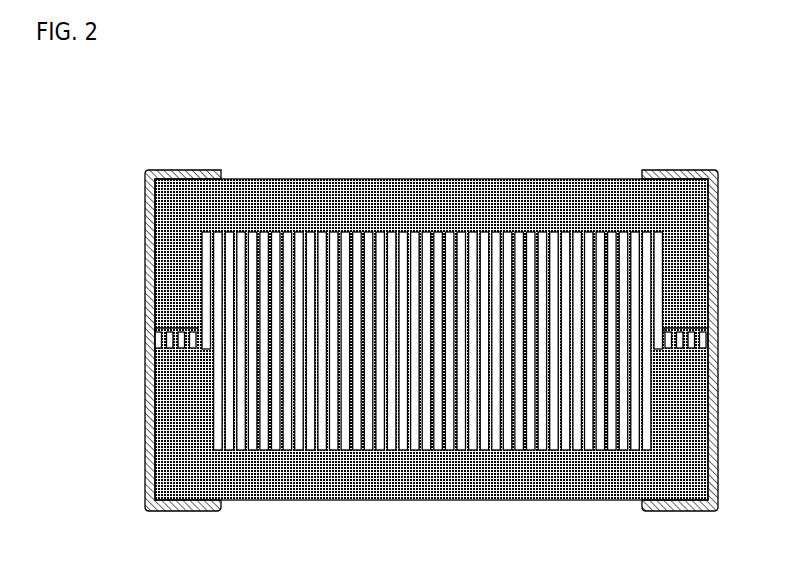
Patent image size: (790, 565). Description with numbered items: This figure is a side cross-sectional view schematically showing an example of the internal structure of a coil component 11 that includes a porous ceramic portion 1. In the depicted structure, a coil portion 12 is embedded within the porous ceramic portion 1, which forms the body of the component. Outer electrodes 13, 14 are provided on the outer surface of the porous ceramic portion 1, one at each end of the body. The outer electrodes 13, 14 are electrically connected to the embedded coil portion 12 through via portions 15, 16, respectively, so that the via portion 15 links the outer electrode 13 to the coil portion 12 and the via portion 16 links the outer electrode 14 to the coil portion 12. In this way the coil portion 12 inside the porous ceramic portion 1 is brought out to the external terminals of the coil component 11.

The porous ceramic portion 1 is at (428, 289).
The coil component 11 is at (428, 284).
The coil portion 12 is at (194, 245).
The outer electrode 13 is at (141, 188).
The outer electrode 14 is at (706, 187).
The via portion 15 is at (172, 319).
The via portion 16 is at (678, 317).